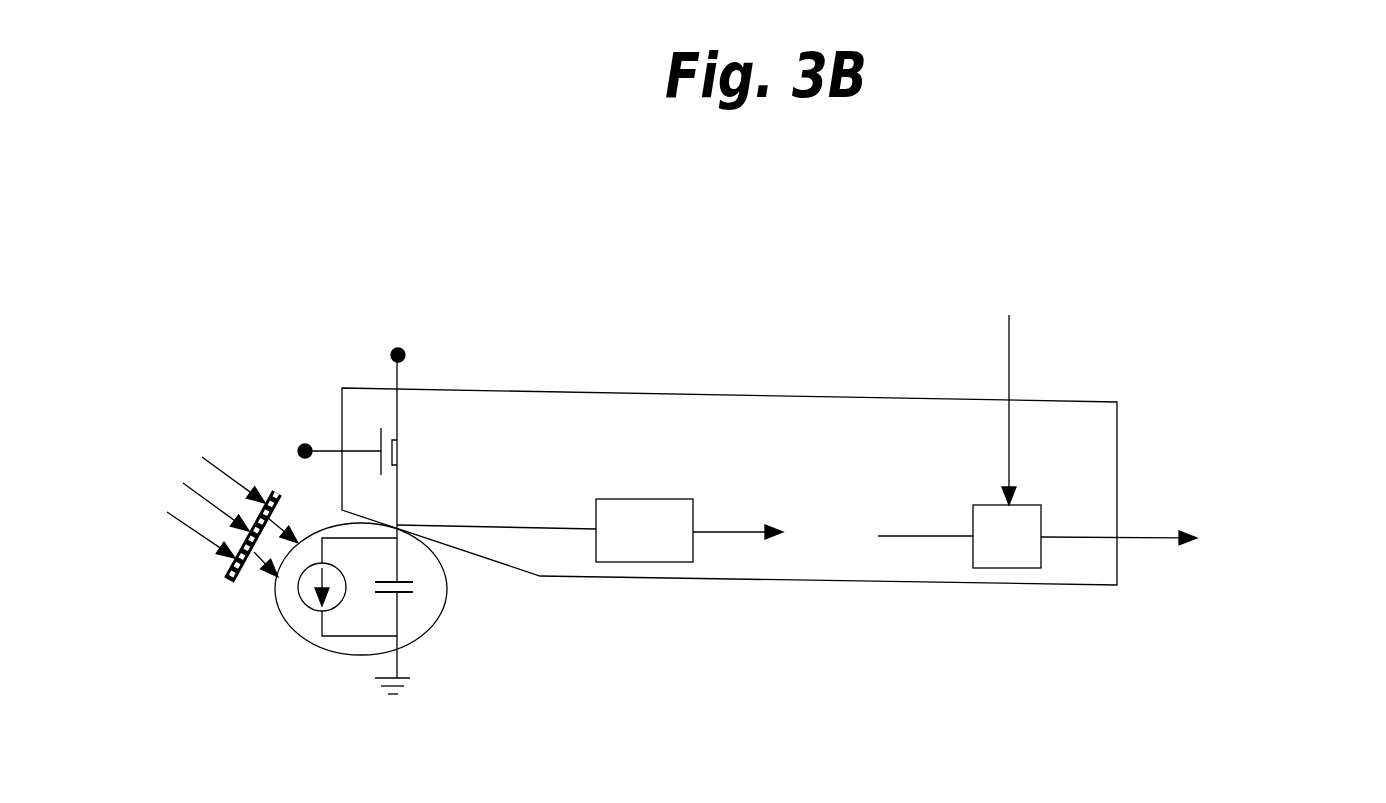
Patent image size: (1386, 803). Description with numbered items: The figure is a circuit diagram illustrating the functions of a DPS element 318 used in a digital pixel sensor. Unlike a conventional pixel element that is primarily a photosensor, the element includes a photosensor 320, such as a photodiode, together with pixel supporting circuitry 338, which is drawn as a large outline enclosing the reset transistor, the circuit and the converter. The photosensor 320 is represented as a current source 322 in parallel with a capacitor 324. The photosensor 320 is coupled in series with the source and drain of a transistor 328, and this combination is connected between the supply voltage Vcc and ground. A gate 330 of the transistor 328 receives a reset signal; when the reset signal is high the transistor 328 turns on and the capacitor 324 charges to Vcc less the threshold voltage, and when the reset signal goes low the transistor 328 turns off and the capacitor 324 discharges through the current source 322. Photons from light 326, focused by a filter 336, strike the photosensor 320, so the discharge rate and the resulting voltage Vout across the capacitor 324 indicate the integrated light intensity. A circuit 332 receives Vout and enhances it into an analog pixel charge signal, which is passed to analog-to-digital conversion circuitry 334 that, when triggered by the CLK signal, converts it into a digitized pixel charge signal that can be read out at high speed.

The DPS element 318 is at (646, 266).
The photosensor 320 is at (417, 628).
The current source 322 is at (305, 615).
The capacitor 324 is at (413, 589).
The light 326 is at (202, 457).
The transistor 328 is at (412, 451).
The gate 330 is at (298, 450).
The circuit 332 is at (648, 508).
The analog-to-digital conversion circuitry 334 is at (1025, 504).
The filter 336 is at (225, 580).
The pixel supporting circuitry 338 is at (830, 395).